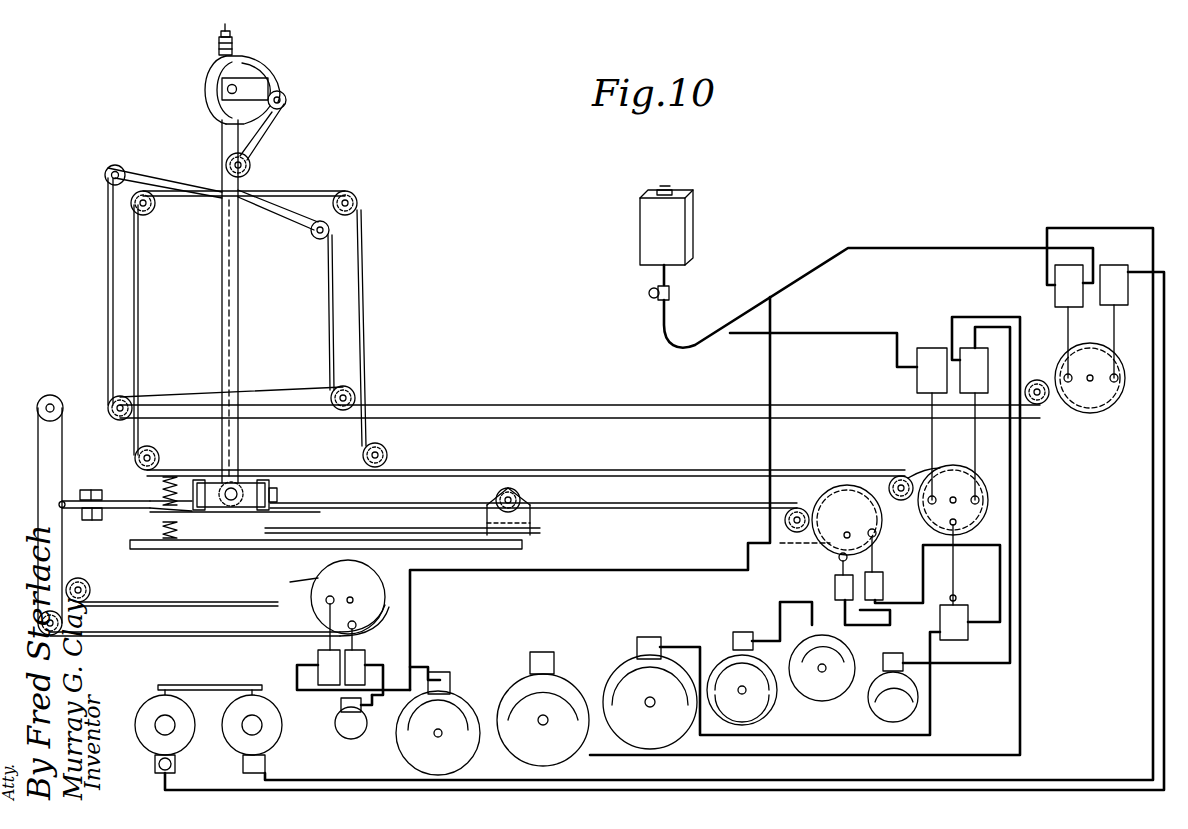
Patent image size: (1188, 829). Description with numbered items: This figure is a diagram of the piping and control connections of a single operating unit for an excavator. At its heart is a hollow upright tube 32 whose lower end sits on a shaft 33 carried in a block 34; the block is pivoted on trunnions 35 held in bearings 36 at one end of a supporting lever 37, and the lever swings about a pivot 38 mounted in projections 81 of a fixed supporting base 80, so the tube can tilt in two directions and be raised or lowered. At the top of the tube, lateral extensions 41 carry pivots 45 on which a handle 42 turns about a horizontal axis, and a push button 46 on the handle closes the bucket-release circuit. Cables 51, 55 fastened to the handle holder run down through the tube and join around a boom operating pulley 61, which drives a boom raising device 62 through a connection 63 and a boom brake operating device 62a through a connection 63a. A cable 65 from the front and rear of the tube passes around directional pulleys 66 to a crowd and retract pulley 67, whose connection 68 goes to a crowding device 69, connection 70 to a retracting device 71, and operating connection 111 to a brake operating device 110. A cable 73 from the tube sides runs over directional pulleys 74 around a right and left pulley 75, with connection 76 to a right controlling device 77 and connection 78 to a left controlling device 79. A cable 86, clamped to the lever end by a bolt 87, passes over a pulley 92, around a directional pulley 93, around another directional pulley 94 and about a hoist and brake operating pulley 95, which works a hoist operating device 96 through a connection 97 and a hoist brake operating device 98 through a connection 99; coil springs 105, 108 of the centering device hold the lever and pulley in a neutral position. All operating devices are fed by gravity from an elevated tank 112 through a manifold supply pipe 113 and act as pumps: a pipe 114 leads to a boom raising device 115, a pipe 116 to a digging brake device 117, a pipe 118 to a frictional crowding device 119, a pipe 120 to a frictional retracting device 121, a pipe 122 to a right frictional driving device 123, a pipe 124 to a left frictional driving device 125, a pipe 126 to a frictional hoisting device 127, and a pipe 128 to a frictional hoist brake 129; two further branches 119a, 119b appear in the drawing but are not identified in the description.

The hollow upright tube 32 is at (238, 330).
The shaft 33 is at (232, 506).
The block 34 is at (245, 484).
The trunnions 35 is at (277, 492).
The bearings 36 is at (200, 480).
The supporting lever 37 is at (262, 535).
The pivot 38 is at (518, 508).
The lateral extensions 41 is at (252, 80).
The handle 42 is at (218, 75).
The pivots 45 is at (228, 90).
The switch controlling push button 46 is at (232, 31).
The cable 51 is at (268, 80).
The cable 55 is at (262, 132).
The boom operating pulley 61 is at (815, 545).
The fluid pressure boom raising device 62 is at (883, 578).
The boom brake operating device 62a is at (835, 585).
The connection 63 is at (875, 555).
The connection 63a is at (819, 568).
The cable 65 is at (138, 305).
The directional pulleys 66 is at (152, 212).
The crowd and retract pulley 67 is at (978, 522).
The connection 68 is at (932, 445).
The fluid pressure crowding device 69 is at (917, 380).
The connection 70 is at (975, 440).
The fluid pressure retracting device 71 is at (988, 372).
The cable 73 is at (155, 178).
The directional pulleys 74 is at (100, 185).
The right and left pulley 75 is at (1094, 408).
The connection 76 is at (1062, 340).
The right fluid pressure controlling device 77 is at (1055, 282).
The connection 78 is at (1114, 335).
The left fluid pressure controlling device 79 is at (1128, 298).
The fixed supporting base 80 is at (440, 550).
The projections 81 is at (508, 540).
The cable 86 is at (62, 440).
The bolt 87 is at (102, 492).
The pulley 92 is at (45, 395).
The directional pulley 93 is at (62, 622).
The directional pulley 94 is at (90, 585).
The hoist and brake operating pulley 95 is at (370, 578).
The fluid pressure hoist operating device 96 is at (318, 660).
The connection 97 is at (322, 630).
The fluid pressure hoist brake operating device 98 is at (428, 640).
The connection 99 is at (390, 615).
The extended coil spring 105 is at (172, 475).
The partially expanded coil spring 108 is at (168, 528).
The fluid pressure brake operating device 110 is at (968, 636).
The operating connection 111 is at (956, 588).
The tank or reservoir 112 is at (672, 245).
The manifold supply pipe 113 is at (820, 280).
The pipe 114 is at (862, 628).
The boom raising device 115 is at (805, 690).
The pipe 116 is at (700, 735).
The digging brake device 117 is at (628, 665).
The pipe 118 is at (1010, 540).
The frictional crowding device 119 is at (872, 705).
The pipe 119a is at (770, 600).
The pipe 119b is at (710, 625).
The pipe 120 is at (1020, 465).
The frictional retracting device 121 is at (510, 680).
The pipe 122 is at (312, 770).
The right frictional driving device 123 is at (275, 740).
The pipe 124 is at (220, 780).
The left frictional driving device 125 is at (148, 740).
The pipe 126 is at (336, 718).
The frictional hoisting device 127 is at (355, 740).
The pipe 128 is at (428, 670).
The frictional hoist brake 129 is at (460, 762).